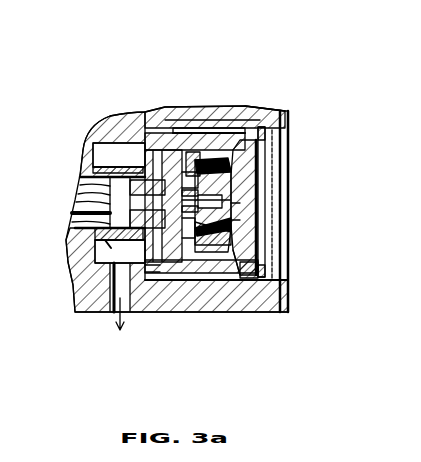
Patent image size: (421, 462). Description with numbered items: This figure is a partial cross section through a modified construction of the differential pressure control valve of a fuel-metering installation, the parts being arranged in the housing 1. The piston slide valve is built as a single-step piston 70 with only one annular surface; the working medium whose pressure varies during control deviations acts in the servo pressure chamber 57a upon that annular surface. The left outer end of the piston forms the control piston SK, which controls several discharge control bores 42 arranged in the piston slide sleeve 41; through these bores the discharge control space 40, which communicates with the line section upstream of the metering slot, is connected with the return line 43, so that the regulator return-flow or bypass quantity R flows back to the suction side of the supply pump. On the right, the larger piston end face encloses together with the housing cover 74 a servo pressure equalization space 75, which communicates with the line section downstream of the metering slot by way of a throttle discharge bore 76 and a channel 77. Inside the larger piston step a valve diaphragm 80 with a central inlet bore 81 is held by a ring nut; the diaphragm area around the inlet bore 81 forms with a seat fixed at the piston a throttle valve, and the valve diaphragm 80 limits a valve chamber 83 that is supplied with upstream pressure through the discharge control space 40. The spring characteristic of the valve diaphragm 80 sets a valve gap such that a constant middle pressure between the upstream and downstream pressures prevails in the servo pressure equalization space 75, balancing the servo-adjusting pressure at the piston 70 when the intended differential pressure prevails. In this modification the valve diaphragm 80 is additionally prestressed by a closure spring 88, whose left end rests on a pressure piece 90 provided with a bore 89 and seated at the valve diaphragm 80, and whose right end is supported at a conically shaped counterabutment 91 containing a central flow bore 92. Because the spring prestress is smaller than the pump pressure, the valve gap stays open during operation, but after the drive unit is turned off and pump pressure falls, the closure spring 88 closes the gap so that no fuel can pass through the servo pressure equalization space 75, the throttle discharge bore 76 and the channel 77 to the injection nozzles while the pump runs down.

The housing 1 is at (78, 290).
The discharge control space 40 is at (90, 180).
The piston slide sleeve 41 is at (112, 160).
The discharge control bores 42 is at (106, 243).
The return line 43 is at (84, 275).
The control piston SK is at (115, 200).
The regulator return-flow or bypass quantity R is at (112, 316).
The servo pressure chamber 57a is at (168, 300).
The single-step piston 70 is at (150, 130).
The housing cover 74 is at (281, 176).
The servo pressure equalization space 75 is at (260, 258).
The throttle discharge bore 76 is at (243, 112).
The channel 77 is at (178, 118).
The valve diaphragm 80 is at (200, 252).
The inlet bore 81 is at (262, 178).
The valve chamber 83 is at (182, 232).
The closure spring 88 is at (224, 262).
The bore 89 is at (230, 200).
The pressure piece 90 is at (198, 160).
The counterabutment 91 is at (250, 237).
The flow bore 92 is at (250, 213).